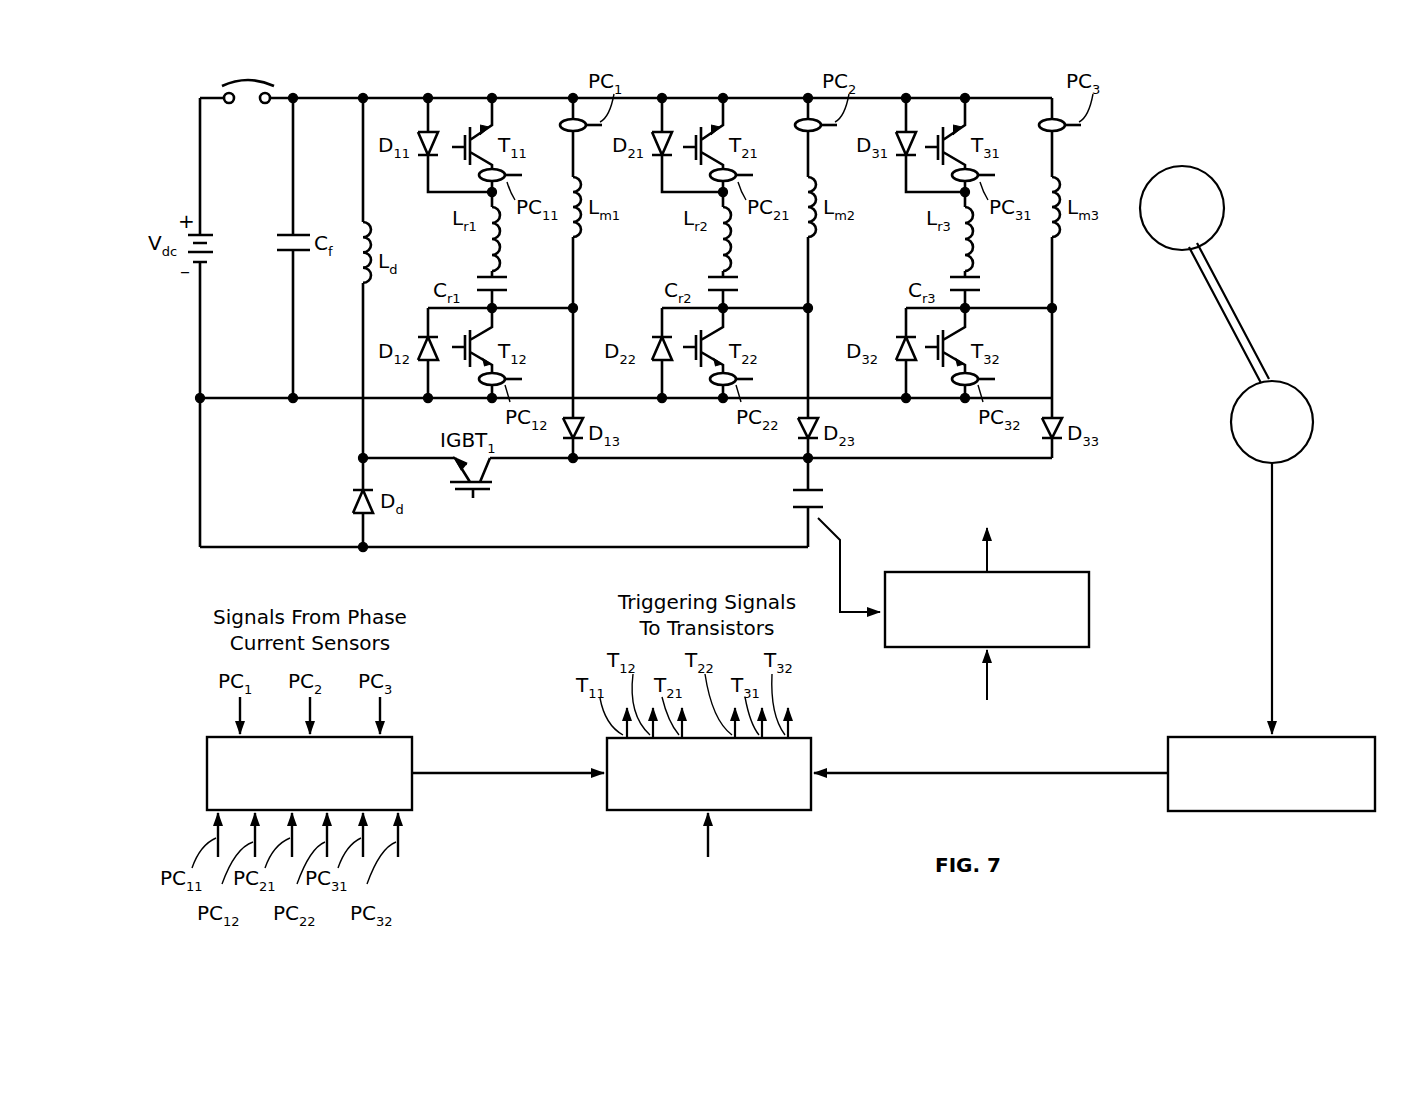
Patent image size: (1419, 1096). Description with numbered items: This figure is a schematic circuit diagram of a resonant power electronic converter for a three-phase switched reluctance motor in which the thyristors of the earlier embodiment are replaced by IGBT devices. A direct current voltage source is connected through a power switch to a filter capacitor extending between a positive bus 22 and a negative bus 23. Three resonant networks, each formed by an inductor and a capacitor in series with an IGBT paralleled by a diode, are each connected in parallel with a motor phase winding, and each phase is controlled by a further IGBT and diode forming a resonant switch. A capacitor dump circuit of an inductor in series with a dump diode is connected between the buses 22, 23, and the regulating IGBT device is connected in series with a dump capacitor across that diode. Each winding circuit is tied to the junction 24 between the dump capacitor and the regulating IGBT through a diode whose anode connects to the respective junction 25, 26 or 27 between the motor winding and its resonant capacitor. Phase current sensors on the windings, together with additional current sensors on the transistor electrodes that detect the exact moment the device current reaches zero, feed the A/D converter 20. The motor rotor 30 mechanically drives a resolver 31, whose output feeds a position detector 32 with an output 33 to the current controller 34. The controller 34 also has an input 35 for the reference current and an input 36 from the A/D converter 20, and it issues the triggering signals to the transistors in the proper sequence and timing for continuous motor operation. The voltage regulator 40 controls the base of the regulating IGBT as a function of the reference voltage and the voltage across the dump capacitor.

The A/D converter 20 is at (207, 757).
The positive bus 22 is at (330, 98).
The negative bus 23 is at (230, 400).
The junction 24 is at (803, 466).
The junction 25 is at (578, 306).
The junction 26 is at (813, 306).
The junction 27 is at (1057, 306).
The rotor 30 is at (1200, 170).
The resolver 31 is at (1305, 393).
The position detector 32 is at (1345, 737).
The output 33 is at (1108, 772).
The current controller 34 is at (790, 811).
The input 35 is at (703, 815).
The input 36 is at (477, 777).
The voltage regulator 40 is at (1090, 600).